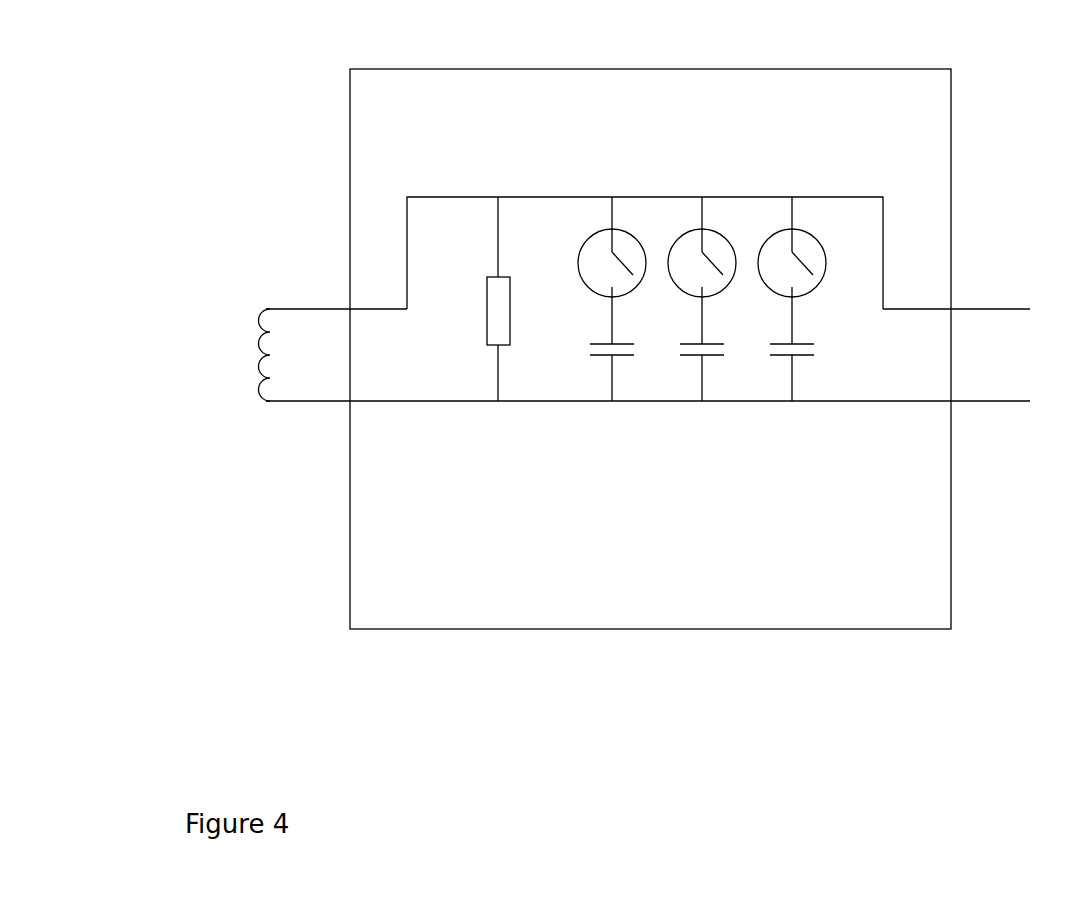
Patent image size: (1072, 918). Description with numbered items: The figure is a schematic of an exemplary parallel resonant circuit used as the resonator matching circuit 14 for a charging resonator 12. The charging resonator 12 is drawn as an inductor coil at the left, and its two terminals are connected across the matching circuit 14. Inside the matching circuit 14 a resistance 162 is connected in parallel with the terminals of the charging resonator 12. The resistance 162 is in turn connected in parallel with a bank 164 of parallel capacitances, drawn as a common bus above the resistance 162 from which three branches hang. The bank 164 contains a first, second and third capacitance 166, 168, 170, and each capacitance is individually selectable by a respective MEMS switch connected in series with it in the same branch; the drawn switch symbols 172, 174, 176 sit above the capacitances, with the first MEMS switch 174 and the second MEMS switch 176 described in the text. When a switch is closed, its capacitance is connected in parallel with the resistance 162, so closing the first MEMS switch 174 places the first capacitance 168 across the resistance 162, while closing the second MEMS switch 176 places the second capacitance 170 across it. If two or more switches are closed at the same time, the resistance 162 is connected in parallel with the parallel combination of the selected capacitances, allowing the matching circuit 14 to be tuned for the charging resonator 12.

The charging resonator 12 is at (260, 309).
The resonator matching circuit 14 is at (383, 82).
The resistance 162 is at (498, 322).
The bank of capacitances 164 is at (606, 178).
The first capacitance 166 is at (623, 357).
The first capacitance 168 is at (713, 357).
The second capacitance 170 is at (803, 357).
The third capacitance 172 is at (623, 287).
The first MEMS switch 174 is at (713, 287).
The second MEMS switch 176 is at (803, 287).